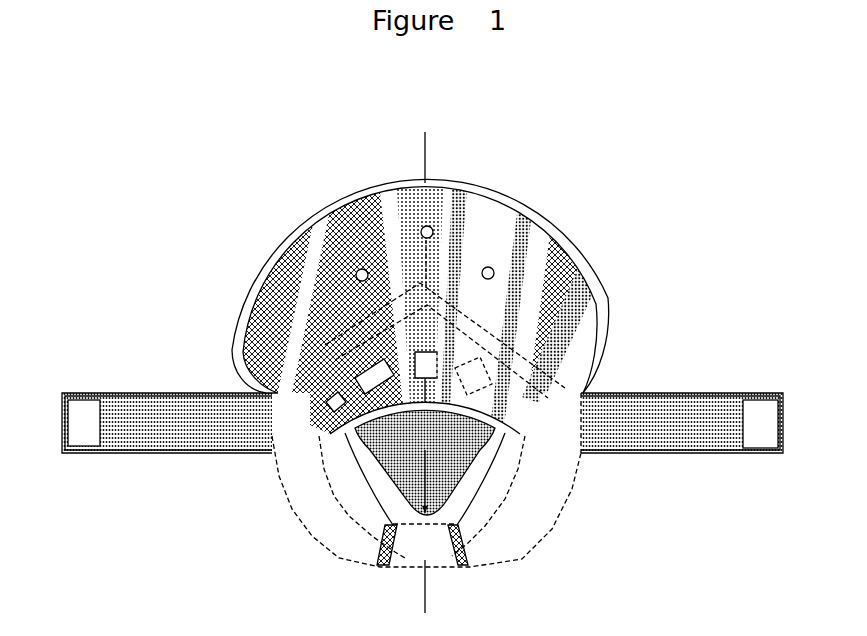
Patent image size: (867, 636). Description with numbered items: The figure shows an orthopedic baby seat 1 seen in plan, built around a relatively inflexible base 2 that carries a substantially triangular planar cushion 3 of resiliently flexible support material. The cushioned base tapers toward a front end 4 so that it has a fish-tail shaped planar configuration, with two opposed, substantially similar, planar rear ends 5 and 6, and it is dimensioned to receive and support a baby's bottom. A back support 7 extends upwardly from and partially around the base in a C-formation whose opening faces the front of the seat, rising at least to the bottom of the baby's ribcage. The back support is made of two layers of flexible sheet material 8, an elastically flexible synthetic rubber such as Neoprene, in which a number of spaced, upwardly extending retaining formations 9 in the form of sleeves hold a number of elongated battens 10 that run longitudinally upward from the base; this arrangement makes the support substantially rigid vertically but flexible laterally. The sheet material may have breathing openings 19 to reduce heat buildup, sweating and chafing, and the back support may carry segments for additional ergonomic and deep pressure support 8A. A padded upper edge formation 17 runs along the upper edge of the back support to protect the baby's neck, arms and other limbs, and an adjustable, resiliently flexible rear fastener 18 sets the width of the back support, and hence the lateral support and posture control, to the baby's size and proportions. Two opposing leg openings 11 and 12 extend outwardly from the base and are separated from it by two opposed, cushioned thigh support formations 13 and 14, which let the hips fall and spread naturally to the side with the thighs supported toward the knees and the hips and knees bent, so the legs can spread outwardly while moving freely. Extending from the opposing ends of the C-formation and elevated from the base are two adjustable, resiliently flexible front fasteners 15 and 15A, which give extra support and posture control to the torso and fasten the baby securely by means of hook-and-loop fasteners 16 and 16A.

The orthopedic baby seat 1 is at (509, 349).
The base 2 is at (382, 497).
The planar cushion 3 is at (521, 491).
The front end 4 is at (454, 572).
The rear end 5 is at (367, 462).
The rear end 6 is at (475, 440).
The back support 7 is at (420, 257).
The flexible sheet material 8 is at (560, 263).
The segments for additional ergonomic and deep pressure support 8A is at (260, 333).
The retaining formations 9 is at (586, 328).
The elongated battens 10 is at (553, 310).
The leg opening 11 is at (318, 500).
The leg opening 12 is at (532, 503).
The thigh support formation 13 is at (328, 569).
The thigh support formation 14 is at (508, 544).
The front fastener 15 is at (167, 388).
The front fastener 15A is at (682, 448).
The hook-and-loop fastener 16 is at (110, 451).
The hook-and-loop fastener 16A is at (735, 386).
The padded upper edge formation 17 is at (310, 302).
The rear fastener 18 is at (357, 290).
The breathing openings 19 is at (463, 239).